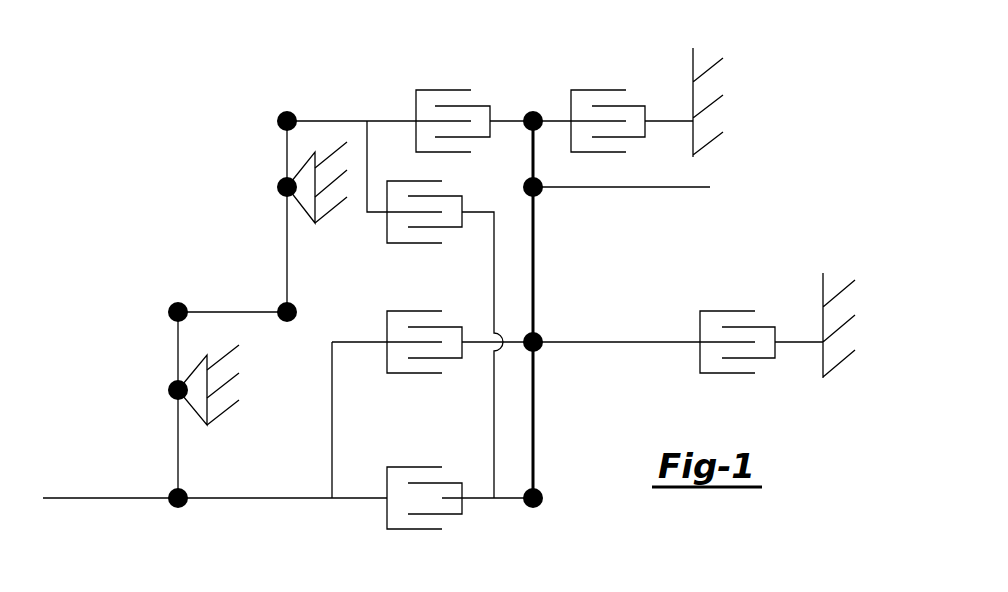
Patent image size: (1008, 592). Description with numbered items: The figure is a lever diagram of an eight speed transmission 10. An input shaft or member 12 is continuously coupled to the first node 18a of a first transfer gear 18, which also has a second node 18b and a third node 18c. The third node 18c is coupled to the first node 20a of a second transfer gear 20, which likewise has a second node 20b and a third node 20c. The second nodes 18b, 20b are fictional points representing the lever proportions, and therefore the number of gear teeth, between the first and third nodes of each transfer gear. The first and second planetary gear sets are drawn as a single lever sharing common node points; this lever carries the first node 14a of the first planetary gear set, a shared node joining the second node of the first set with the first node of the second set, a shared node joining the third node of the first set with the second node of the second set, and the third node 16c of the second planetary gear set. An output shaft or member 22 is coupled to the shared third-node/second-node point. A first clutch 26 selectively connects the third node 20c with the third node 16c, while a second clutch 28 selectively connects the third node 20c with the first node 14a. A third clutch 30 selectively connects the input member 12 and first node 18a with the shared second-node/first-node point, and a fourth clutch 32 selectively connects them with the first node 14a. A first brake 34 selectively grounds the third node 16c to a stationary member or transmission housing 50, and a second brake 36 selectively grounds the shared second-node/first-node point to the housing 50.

The transmission 10 is at (766, 49).
The input shaft or member 12 is at (91, 500).
The first node of first planetary gear set 14a is at (540, 505).
The third node of second planetary gear set 16c is at (537, 110).
The first transfer gear 18 is at (192, 522).
The first node of first transfer gear 18a is at (170, 490).
The second node of first transfer gear 18b is at (169, 392).
The third node of first transfer gear 18c is at (170, 307).
The second transfer gear 20 is at (289, 338).
The first node of second transfer gear 20a is at (278, 304).
The second node of second transfer gear 20b is at (278, 190).
The third node of second transfer gear 20c is at (278, 117).
The output shaft or member 22 is at (672, 188).
The first clutch 26 is at (436, 89).
The second clutch 28 is at (413, 243).
The third clutch 30 is at (415, 375).
The fourth clutch 32 is at (415, 531).
The first brake 34 is at (598, 89).
The second brake 36 is at (730, 311).
The stationary member or transmission housing 50 is at (693, 66).